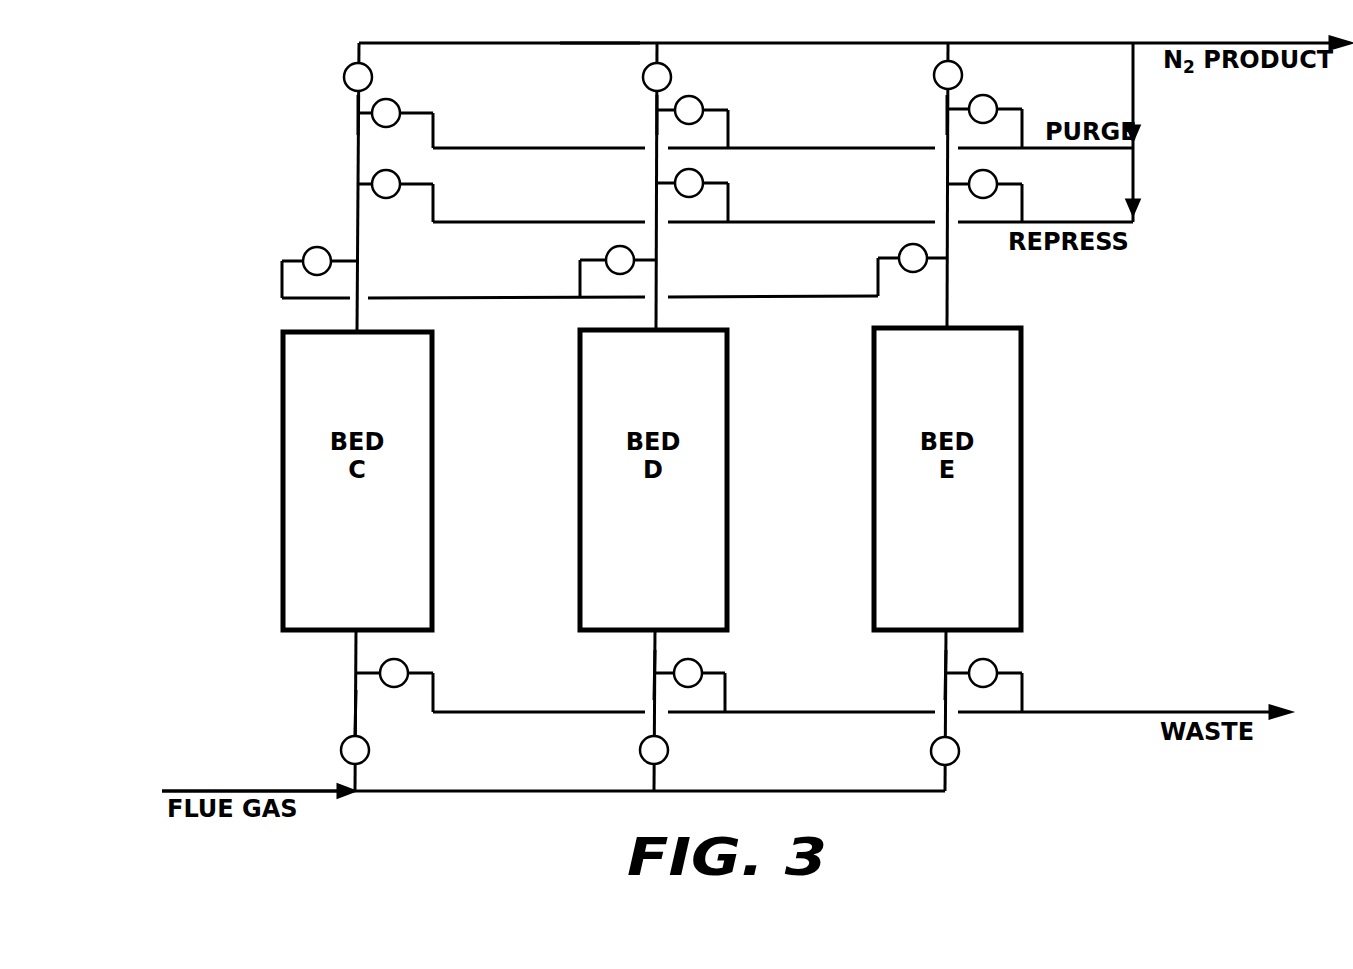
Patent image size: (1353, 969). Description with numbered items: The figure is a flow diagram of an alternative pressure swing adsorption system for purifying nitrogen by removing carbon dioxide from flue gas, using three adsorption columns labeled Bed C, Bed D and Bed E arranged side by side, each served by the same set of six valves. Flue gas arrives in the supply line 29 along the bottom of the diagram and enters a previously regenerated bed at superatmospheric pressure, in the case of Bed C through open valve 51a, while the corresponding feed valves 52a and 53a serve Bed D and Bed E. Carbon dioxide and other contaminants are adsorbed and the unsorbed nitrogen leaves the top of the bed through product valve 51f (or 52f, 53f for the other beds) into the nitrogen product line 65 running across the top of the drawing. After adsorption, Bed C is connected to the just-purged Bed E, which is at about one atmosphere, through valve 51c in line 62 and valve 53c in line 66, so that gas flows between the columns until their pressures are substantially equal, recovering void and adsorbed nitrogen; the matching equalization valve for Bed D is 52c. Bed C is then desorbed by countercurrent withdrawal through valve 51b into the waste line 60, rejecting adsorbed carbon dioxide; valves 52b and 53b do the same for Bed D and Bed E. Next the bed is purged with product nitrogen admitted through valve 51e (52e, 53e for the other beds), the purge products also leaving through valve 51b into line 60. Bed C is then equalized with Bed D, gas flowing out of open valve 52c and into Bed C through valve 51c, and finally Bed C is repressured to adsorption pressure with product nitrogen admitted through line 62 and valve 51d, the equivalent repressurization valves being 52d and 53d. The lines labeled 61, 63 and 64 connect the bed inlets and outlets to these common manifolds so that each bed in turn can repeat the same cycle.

The supply line 29 is at (250, 791).
The waste line 60 is at (520, 712).
The conduit to bed C 61 is at (352, 704).
The line to Bed C 62 is at (354, 122).
The conduit to bed D 63 is at (652, 662).
The conduit from bed D 64 is at (652, 122).
The nitrogen product line 65 is at (576, 44).
The line to Bed E 66 is at (942, 122).
The feed valve of Bed C 51a is at (369, 750).
The desorption valve of Bed C 51b is at (406, 664).
The equalization valve of Bed C 51c is at (310, 248).
The repressurization valve of Bed C 51d is at (412, 162).
The purge valve of Bed C 51e is at (402, 104).
The product valve of Bed C 51f is at (372, 80).
The feed valve of Bed D 52a is at (668, 750).
The desorption valve of Bed D 52b is at (706, 650).
The equalization valve of Bed D 52c is at (620, 246).
The repressurization valve of Bed D 52d is at (706, 164).
The purge valve of Bed D 52e is at (704, 103).
The product valve of Bed D 52f is at (671, 80).
The feed valve of Bed E 53a is at (959, 751).
The desorption valve of Bed E 53b is at (995, 664).
The equalization valve of Bed E 53c is at (910, 246).
The repressurization valve of Bed E 53d is at (993, 173).
The purge valve of Bed E 53e is at (998, 102).
The product valve of Bed E 53f is at (962, 78).